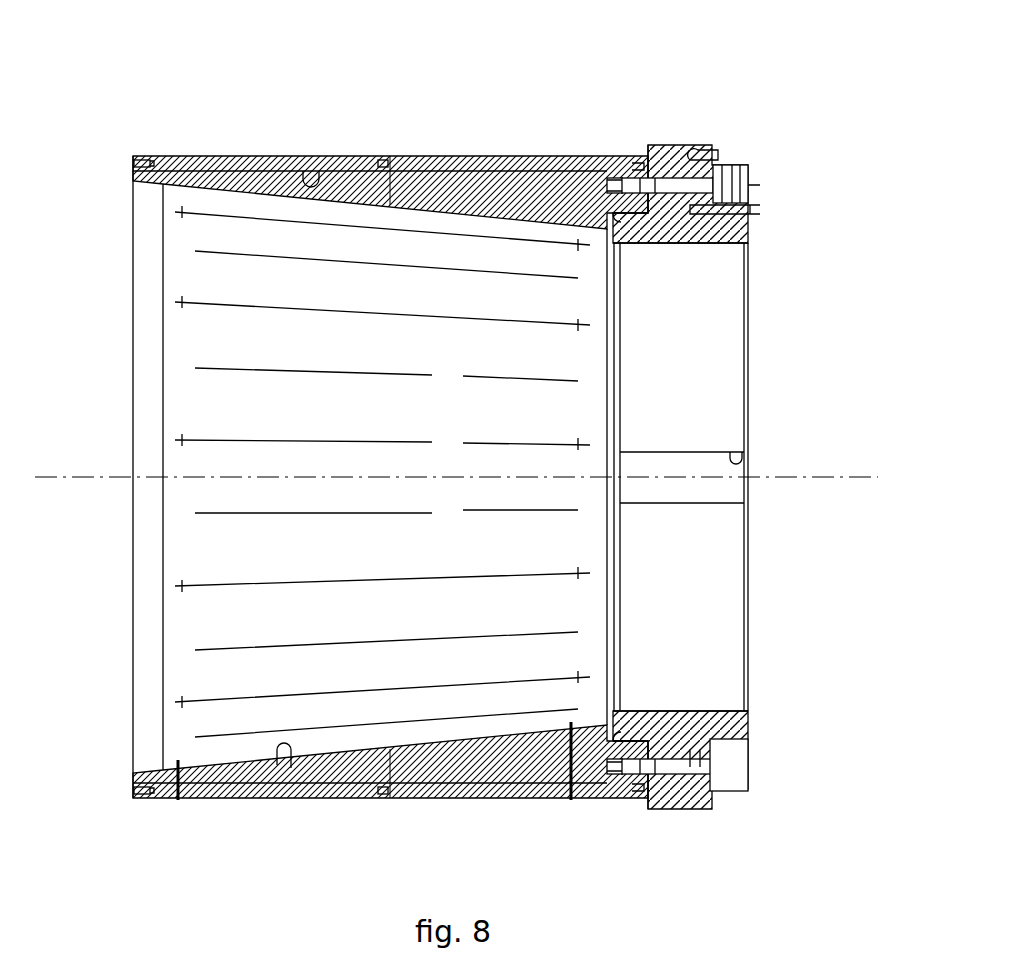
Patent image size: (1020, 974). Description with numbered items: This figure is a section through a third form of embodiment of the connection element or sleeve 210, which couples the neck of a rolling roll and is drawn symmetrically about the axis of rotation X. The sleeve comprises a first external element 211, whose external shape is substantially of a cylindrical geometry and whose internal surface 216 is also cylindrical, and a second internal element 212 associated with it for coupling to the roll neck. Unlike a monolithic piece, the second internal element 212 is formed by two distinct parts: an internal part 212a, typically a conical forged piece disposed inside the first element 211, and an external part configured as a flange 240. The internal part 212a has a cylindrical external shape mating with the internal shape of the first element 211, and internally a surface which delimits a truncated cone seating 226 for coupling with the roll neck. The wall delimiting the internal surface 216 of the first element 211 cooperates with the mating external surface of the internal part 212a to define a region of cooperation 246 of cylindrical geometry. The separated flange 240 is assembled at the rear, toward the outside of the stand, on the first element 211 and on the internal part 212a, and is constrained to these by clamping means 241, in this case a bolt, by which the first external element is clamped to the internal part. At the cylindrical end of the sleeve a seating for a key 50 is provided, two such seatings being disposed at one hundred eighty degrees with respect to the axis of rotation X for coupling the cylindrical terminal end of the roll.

The connection element or sleeve 210 is at (245, 88).
The first external element 211 is at (555, 165).
The second internal element 212 is at (511, 786).
The internal part 212a is at (472, 190).
The internal surface 216 is at (318, 170).
The truncated cone seating 226 is at (287, 768).
The flange 240 is at (735, 718).
The clamping means (bolt) 241 is at (722, 180).
The region of cooperation 246 is at (356, 184).
The seating for key 50 is at (745, 459).
The axis of rotation X is at (83, 477).